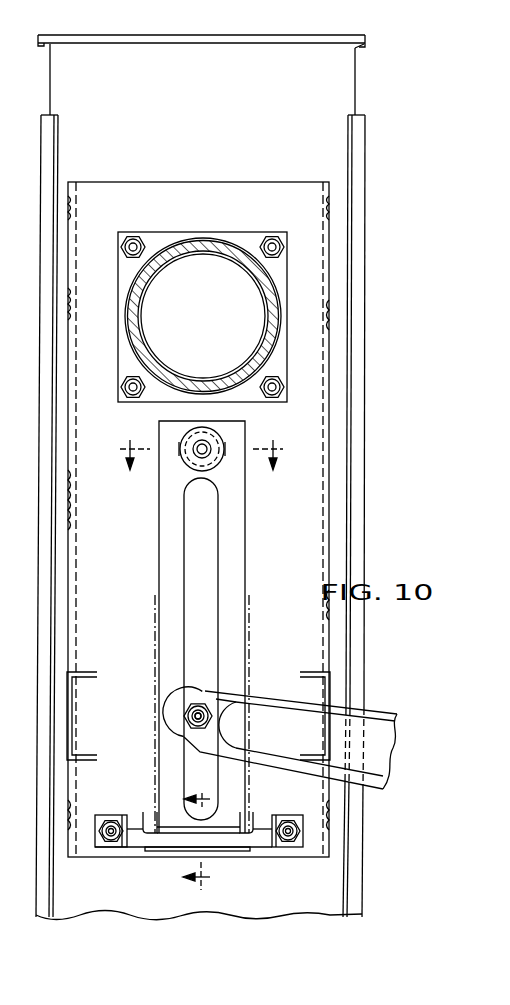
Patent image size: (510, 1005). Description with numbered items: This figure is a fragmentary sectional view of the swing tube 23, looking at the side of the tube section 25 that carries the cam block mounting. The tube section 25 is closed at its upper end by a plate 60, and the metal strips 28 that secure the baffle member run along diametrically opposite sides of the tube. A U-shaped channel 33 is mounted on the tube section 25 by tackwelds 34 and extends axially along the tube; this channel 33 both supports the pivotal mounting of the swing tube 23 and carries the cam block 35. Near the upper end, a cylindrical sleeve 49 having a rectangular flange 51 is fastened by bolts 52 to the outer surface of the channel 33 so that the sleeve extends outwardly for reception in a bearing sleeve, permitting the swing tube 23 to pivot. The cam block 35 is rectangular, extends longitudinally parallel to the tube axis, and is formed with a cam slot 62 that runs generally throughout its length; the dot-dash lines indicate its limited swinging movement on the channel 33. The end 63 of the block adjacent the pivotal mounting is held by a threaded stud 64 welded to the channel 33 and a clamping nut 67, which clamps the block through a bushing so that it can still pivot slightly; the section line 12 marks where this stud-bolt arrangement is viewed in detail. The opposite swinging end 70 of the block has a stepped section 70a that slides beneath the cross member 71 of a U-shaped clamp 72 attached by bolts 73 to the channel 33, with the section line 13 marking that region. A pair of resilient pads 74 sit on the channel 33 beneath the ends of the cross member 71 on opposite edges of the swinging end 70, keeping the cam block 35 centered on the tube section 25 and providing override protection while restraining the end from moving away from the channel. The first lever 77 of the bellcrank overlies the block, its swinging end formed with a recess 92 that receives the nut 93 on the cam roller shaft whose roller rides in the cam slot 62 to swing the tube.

The section line 12- 12 is at (203, 446).
The section line 13- 13 is at (200, 840).
The swing tube 23 is at (245, 460).
The tube section 25 is at (315, 83).
The metal strips 28 is at (357, 225).
The U-shaped channel 33 is at (242, 490).
The tackwelds 34 is at (67, 193).
The cam block 35 is at (211, 615).
The cylindrical sleeve 49 is at (225, 240).
The rectangular flange 51 is at (157, 242).
The bolts 52 is at (135, 238).
The plate 60 is at (255, 33).
The cam slot 62 is at (186, 535).
The end of cam block 63 is at (218, 450).
The threaded stud 64 is at (202, 452).
The clamping nut 67 is at (212, 453).
The swinging end of cam block 70 is at (190, 831).
The stepped section 70a is at (177, 813).
The cross member 71 is at (227, 838).
The U-shaped clamp 72 is at (131, 851).
The bolts 73 is at (107, 832).
The resilient pads 74 is at (148, 813).
The first lever 77 is at (314, 470).
The recess 92 is at (186, 718).
The nut 93 is at (198, 708).